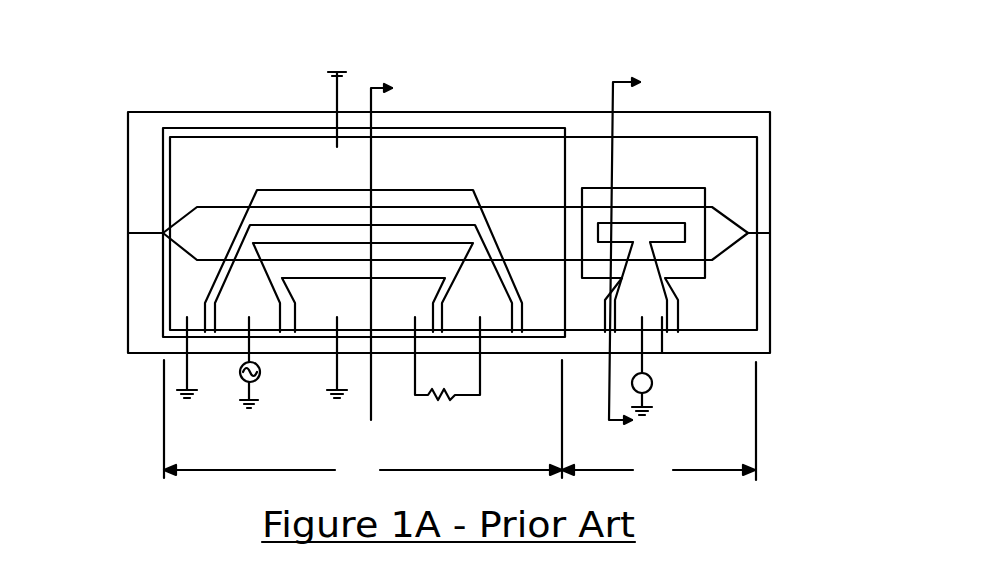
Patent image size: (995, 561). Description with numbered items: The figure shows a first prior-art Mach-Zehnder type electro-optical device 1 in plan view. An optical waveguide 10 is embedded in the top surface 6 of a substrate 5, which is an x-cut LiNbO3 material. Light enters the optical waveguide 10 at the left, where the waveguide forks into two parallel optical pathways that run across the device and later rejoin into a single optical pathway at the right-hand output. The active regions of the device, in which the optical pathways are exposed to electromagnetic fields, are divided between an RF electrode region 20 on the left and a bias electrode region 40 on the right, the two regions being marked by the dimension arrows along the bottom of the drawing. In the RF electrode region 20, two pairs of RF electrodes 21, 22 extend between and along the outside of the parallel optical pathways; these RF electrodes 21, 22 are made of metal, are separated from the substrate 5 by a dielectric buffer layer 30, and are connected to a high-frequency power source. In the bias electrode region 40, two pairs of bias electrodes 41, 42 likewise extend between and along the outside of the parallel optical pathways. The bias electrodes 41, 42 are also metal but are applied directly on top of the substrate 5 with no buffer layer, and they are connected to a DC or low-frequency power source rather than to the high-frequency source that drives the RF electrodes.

The Mach-Zehnder type electro-optical device 1 is at (798, 57).
The substrate 5 is at (770, 338).
The top surface 6 is at (768, 300).
The optical waveguide 10 is at (147, 233).
The RF electrode region 20 is at (363, 421).
The RF electrode 21 is at (400, 318).
The RF electrode 22 is at (195, 320).
The dielectric buffer layer 30 is at (410, 132).
The bias electrode region 40 is at (659, 423).
The bias electrode 41 is at (628, 320).
The bias electrode 42 is at (738, 317).